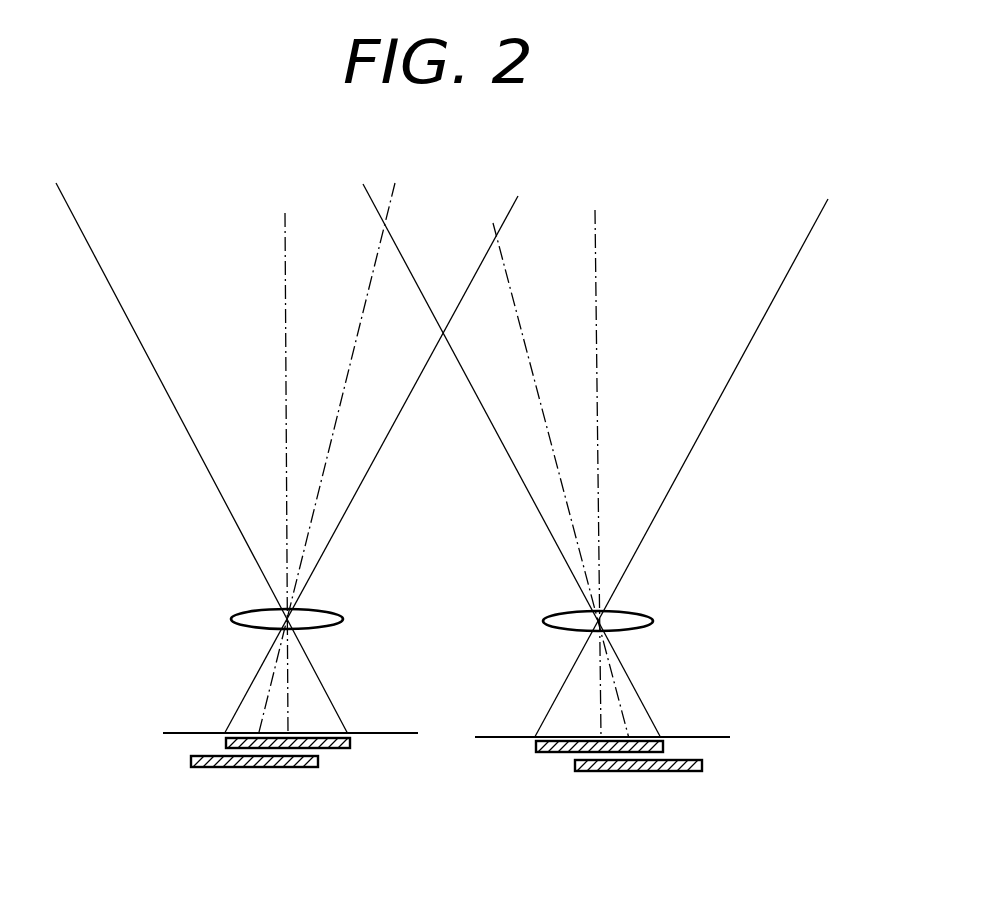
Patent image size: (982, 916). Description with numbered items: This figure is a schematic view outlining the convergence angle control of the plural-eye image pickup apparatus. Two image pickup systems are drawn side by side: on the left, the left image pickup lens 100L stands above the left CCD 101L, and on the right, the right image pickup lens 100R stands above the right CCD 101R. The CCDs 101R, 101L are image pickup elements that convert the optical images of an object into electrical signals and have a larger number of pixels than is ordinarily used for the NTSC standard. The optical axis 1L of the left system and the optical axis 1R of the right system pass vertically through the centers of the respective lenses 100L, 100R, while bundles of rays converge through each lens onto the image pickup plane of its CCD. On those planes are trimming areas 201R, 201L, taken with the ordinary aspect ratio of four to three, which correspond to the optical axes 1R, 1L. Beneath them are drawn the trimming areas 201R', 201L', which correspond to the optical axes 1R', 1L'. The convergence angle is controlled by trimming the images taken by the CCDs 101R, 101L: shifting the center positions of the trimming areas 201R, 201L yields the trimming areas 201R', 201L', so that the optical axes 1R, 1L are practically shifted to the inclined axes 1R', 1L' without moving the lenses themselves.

The optical axis of left image pickup system 1L is at (256, 462).
The shifted optical axis of left image pickup system 1L' is at (327, 458).
The optical axis of right image pickup system 1R is at (627, 473).
The shifted optical axis of right image pickup system 1R' is at (561, 476).
The left image pickup lens 100L is at (232, 618).
The right image pickup lens 100R is at (652, 621).
The left CCD 101L is at (182, 732).
The right CCD 101R is at (697, 738).
The left trimming area 201L is at (309, 783).
The shifted left trimming area 201L' is at (247, 800).
The right trimming area 201R is at (589, 786).
The shifted right trimming area 201R' is at (658, 803).